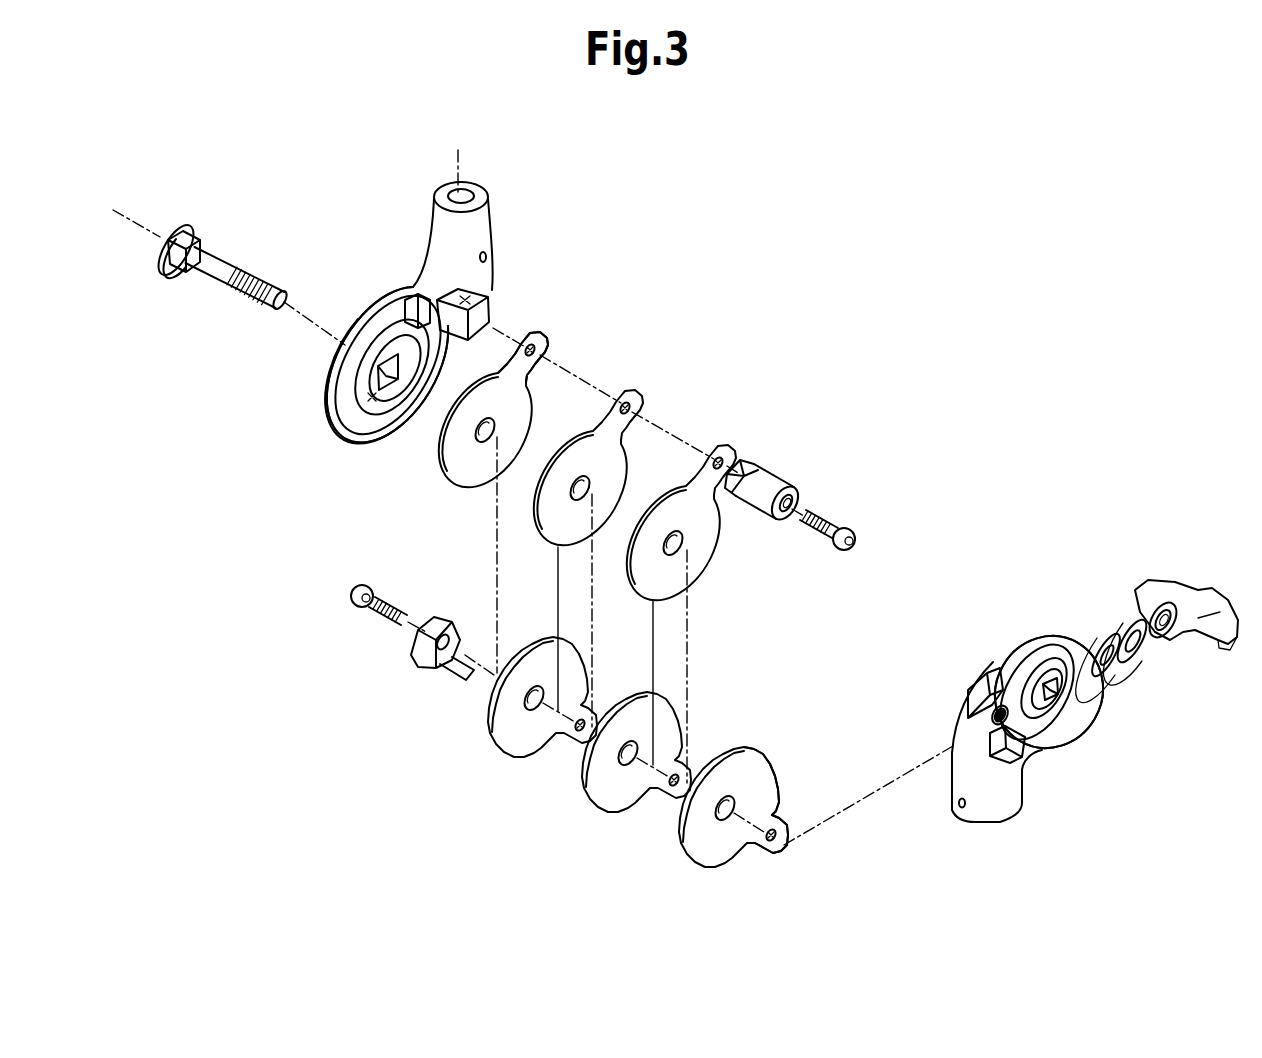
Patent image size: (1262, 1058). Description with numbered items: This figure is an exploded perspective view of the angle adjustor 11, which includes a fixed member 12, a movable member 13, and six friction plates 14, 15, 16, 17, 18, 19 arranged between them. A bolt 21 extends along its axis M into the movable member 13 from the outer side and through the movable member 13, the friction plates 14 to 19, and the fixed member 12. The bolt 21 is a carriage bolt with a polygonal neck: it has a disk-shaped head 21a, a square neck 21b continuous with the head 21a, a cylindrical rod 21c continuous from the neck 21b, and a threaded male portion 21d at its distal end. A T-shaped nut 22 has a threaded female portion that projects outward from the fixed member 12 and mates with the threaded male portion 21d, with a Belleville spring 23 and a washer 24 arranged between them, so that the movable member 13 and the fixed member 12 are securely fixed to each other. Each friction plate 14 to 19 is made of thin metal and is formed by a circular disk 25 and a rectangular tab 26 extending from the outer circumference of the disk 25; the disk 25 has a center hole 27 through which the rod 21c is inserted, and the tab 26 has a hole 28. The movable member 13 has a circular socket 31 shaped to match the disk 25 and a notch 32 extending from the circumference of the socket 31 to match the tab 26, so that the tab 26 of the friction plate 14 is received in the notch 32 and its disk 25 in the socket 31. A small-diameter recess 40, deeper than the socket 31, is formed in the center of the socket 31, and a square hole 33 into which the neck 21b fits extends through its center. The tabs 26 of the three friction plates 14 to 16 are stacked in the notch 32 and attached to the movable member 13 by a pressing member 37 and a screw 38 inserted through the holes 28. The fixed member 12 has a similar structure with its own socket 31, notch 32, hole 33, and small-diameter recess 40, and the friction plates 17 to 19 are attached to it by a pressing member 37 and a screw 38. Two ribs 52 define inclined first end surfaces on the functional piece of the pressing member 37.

The angle adjustor 11 is at (943, 440).
The fixed member 12 is at (1020, 792).
The movable member 13 is at (428, 248).
The friction plate 14 is at (452, 478).
The friction plate 15 is at (548, 535).
The friction plate 16 is at (640, 593).
The friction plate 17 is at (708, 858).
The friction plate 18 is at (615, 800).
The friction plate 19 is at (521, 750).
The bolt 21 is at (224, 256).
The head 21a is at (180, 228).
The neck 21b is at (180, 266).
The rod 21c is at (214, 280).
The threaded male portion 21d is at (258, 279).
The T-shaped nut 22 is at (1158, 583).
The Belleville spring 23 is at (1096, 644).
The washer 24 is at (1123, 628).
The disk 25 is at (530, 406).
The tab 26 is at (563, 321).
The center hole 27 is at (471, 437).
The hole 28 is at (540, 351).
The socket 31 is at (371, 438).
The notch 32 is at (485, 299).
The square hole 33 is at (376, 376).
The pressing member 37 is at (601, 585).
The screw 38 is at (851, 528).
The small-diameter recess 40 is at (346, 412).
The ribs 52 is at (757, 467).
The axis M is at (130, 214).